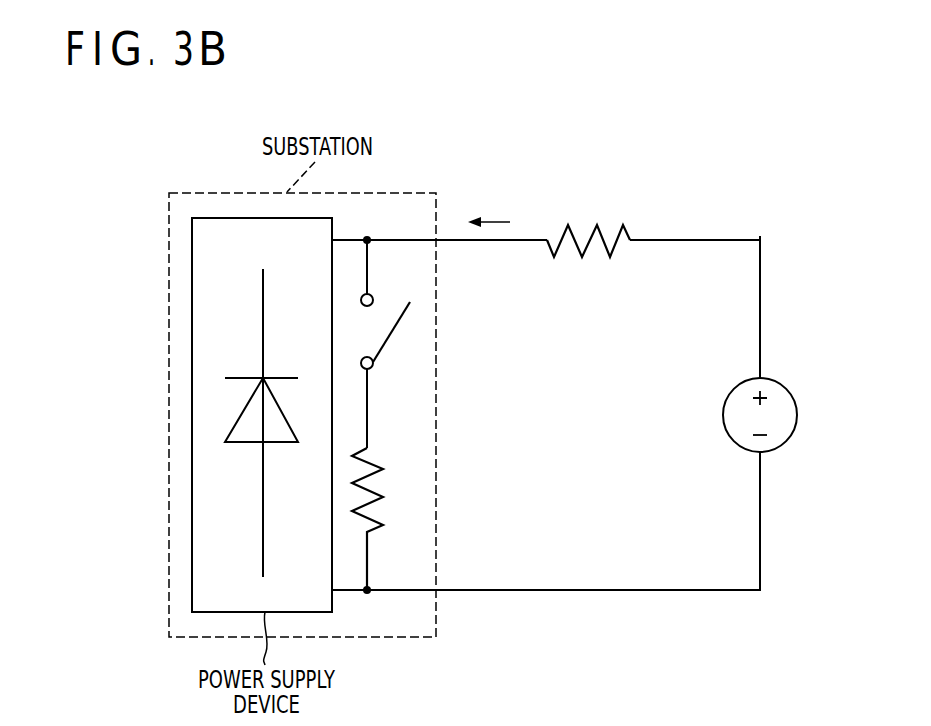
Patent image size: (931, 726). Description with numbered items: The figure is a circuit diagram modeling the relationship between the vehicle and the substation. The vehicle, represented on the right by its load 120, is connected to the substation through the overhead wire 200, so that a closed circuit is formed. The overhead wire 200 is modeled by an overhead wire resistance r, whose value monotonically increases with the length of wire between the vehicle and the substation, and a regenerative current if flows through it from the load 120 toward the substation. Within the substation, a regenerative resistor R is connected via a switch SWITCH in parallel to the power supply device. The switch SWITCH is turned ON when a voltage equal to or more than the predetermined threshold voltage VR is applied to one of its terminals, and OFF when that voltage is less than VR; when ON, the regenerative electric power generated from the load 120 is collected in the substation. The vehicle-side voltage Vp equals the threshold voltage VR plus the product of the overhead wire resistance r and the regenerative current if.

The overhead wire 200 is at (610, 208).
The load 120 is at (797, 414).
The regenerative resistor R is at (375, 464).
The overhead wire resistance r is at (640, 192).
The switch SWITCH is at (397, 325).
The threshold voltage VR is at (368, 222).
The voltage Vp is at (758, 219).
The regenerative current if is at (489, 207).